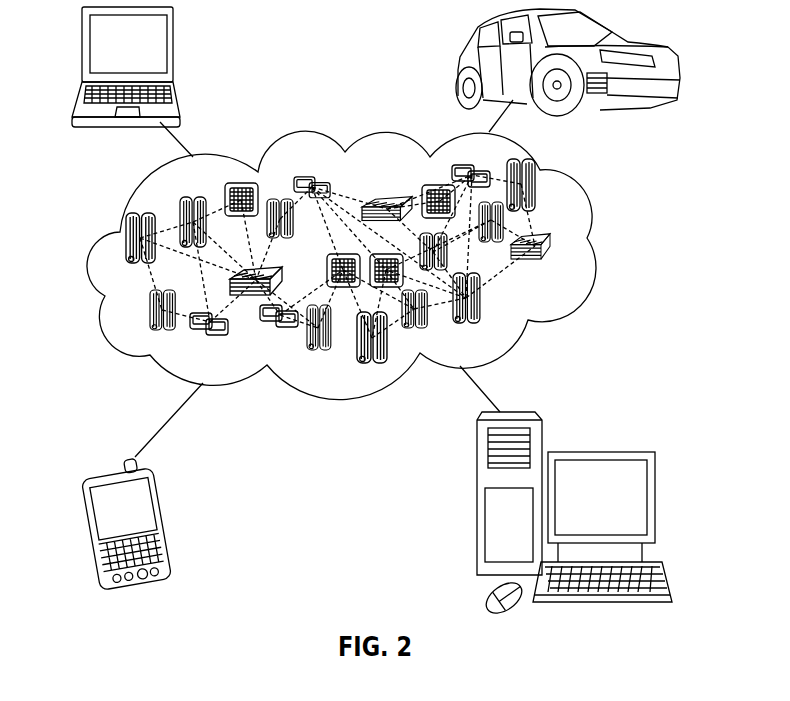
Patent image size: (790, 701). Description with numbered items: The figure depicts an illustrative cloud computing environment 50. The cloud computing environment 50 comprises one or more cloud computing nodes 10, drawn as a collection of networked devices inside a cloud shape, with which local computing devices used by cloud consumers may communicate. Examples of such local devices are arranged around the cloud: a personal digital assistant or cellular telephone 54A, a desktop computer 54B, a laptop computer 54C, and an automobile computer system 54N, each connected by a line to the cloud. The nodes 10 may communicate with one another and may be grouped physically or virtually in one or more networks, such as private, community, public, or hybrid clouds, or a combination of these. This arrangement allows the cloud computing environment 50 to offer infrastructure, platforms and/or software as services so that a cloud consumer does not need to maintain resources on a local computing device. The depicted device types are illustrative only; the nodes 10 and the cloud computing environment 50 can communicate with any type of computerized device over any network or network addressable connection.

The cloud computing environment 50 is at (598, 244).
The cloud computing node 10 is at (562, 268).
The personal digital assistant (PDA) or cellular telephone 54A is at (167, 522).
The desktop computer 54B is at (597, 452).
The laptop computer 54C is at (175, 53).
The automobile computer system 54N is at (460, 65).